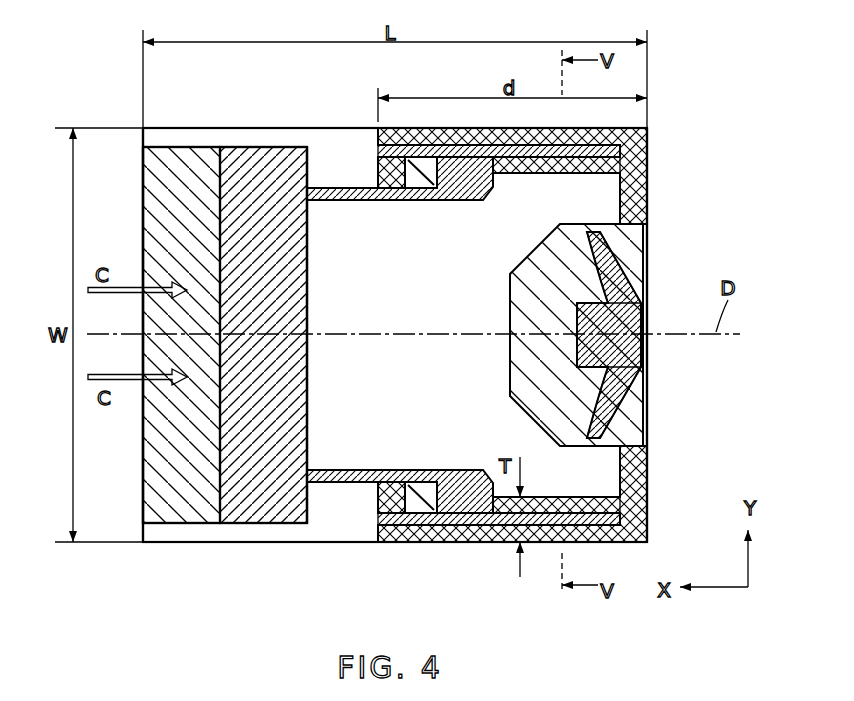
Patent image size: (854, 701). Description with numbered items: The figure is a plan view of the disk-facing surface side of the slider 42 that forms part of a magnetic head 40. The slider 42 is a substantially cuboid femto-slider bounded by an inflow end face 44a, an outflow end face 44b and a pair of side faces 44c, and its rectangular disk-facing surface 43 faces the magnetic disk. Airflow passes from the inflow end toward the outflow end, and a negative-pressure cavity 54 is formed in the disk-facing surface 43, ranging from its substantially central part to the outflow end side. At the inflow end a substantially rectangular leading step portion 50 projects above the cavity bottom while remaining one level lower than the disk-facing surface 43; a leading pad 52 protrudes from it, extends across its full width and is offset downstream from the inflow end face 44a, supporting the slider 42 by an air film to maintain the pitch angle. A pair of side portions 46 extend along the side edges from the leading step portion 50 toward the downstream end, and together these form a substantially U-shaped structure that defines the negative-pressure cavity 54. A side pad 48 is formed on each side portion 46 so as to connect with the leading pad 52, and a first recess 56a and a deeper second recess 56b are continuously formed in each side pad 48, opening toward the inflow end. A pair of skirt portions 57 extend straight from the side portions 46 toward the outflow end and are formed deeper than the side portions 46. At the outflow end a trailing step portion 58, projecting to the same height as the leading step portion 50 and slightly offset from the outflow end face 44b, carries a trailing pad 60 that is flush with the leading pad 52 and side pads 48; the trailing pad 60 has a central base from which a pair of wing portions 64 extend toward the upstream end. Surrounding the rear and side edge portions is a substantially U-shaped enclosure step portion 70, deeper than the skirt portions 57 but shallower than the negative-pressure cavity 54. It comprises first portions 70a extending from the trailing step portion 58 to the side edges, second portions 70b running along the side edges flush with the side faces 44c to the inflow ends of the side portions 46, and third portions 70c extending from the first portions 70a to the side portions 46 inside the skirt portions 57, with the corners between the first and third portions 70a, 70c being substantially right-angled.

The magnetic head 40 is at (172, 547).
The slider 42 is at (257, 550).
The disk-facing surface 43 is at (283, 500).
The inflow end face 44a is at (140, 430).
The outflow end face 44b is at (648, 458).
The side faces 44c is at (323, 128).
The side portions 46 is at (336, 206).
The side pad 48 is at (472, 182).
The leading step portion 50 is at (177, 170).
The leading pad 52 is at (267, 167).
The negative-pressure cavity 54 is at (413, 310).
The first recess 56a is at (425, 178).
The second recess 56b is at (388, 178).
The skirt portions 57 is at (578, 160).
The trailing step portion 58 is at (522, 368).
The trailing pad 60 is at (628, 318).
The wing portions 64 is at (612, 250).
The enclosure step portion 70 is at (632, 203).
The first portions 70a is at (643, 165).
The second portions 70b is at (535, 127).
The third portions 70c is at (525, 173).